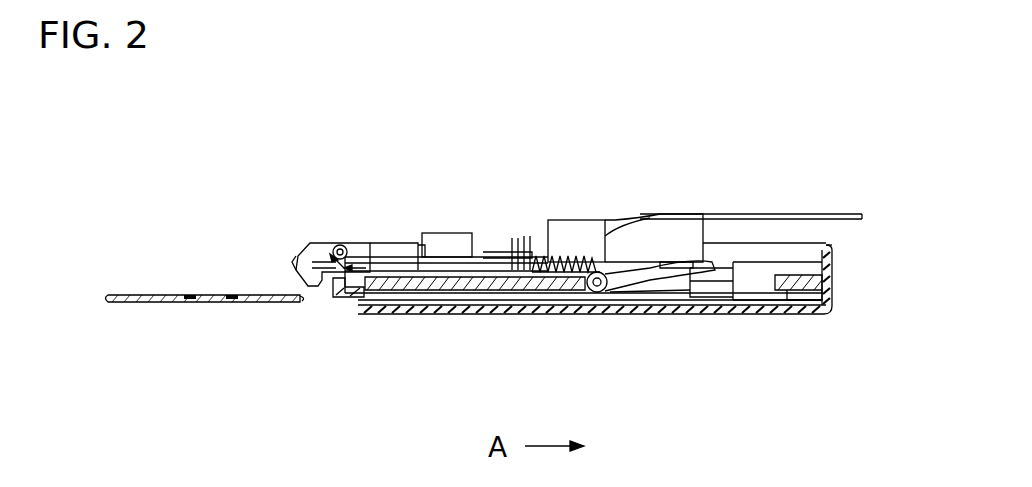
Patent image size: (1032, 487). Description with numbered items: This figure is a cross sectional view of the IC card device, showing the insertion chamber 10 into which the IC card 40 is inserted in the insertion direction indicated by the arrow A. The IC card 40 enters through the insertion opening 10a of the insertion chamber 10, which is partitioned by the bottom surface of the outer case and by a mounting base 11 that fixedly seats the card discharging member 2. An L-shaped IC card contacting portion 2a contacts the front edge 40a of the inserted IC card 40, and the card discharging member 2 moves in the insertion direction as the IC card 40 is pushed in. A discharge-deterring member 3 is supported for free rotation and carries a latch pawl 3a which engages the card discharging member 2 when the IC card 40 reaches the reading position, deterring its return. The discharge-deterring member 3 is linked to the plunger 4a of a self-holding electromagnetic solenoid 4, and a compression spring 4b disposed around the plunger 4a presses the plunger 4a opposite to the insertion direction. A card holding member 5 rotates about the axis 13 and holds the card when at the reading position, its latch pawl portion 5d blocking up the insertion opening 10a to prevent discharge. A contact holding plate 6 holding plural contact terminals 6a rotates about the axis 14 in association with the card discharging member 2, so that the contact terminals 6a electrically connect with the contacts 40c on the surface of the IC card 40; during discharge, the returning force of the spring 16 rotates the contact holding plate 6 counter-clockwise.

The card discharging member 2 is at (730, 262).
The IC card contacting portion 2a is at (760, 314).
The discharge-deterring member 3 is at (478, 257).
The latch pawl 3a is at (414, 257).
The self-holding electromagnetic solenoid 4 is at (598, 228).
The plunger 4a is at (528, 257).
The compression spring 4b is at (536, 255).
The card holding member 5 is at (303, 243).
The latch pawl portion 5d is at (294, 278).
The contact holding plate 6 is at (672, 262).
The contact terminals 6a is at (680, 314).
The insertion chamber 10 is at (374, 306).
The insertion opening 10a is at (358, 296).
The mounting base 11 is at (832, 278).
The axis 13 is at (346, 248).
The axis 14 is at (588, 295).
The spring 16 is at (573, 250).
The IC card 40 is at (164, 302).
The front edge 40a is at (298, 301).
The contacts 40c is at (232, 296).